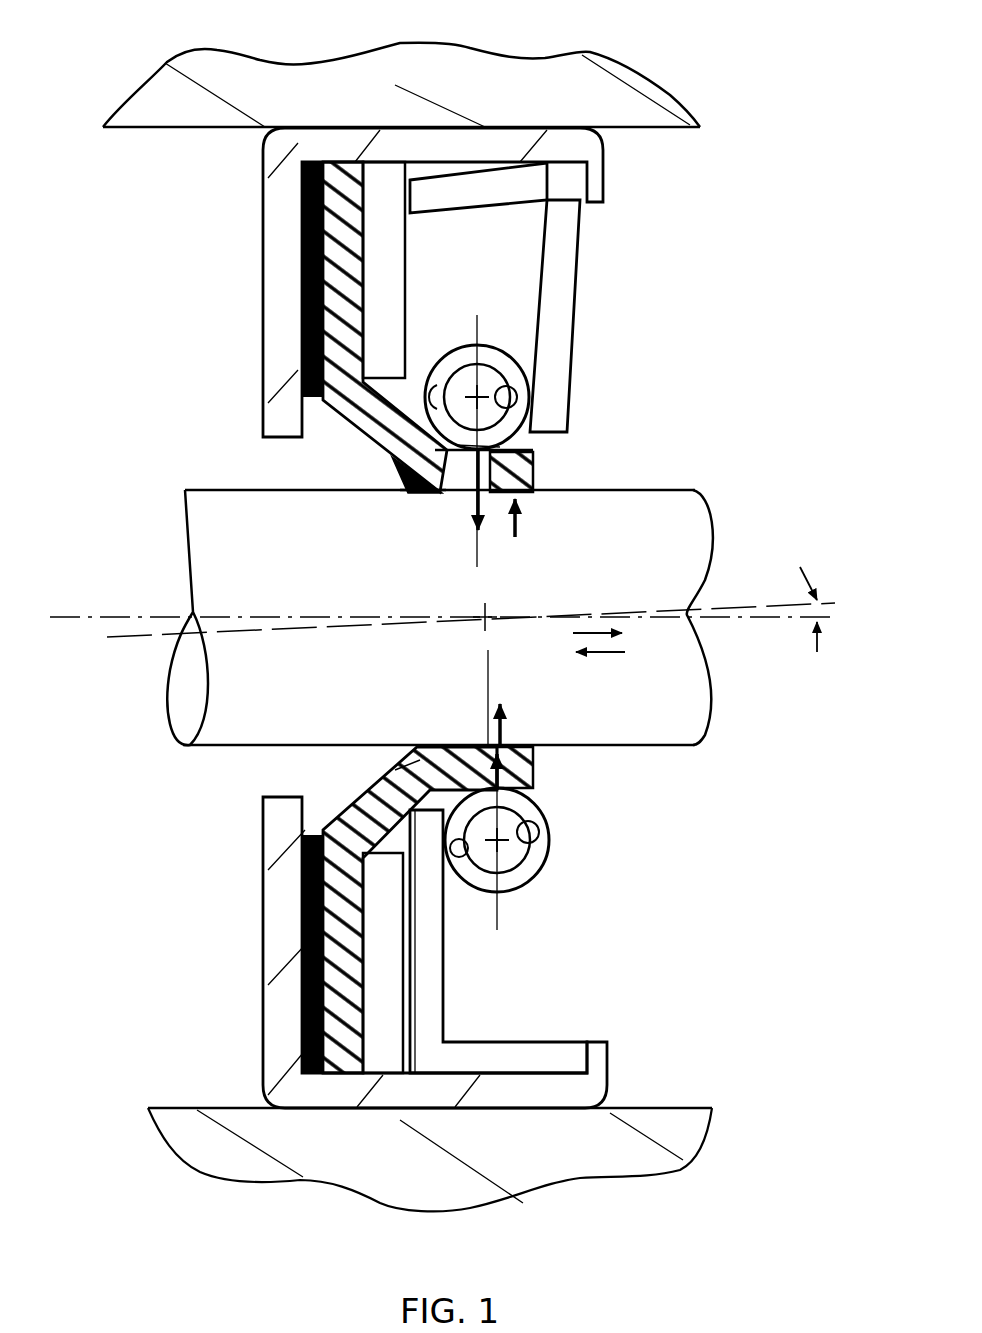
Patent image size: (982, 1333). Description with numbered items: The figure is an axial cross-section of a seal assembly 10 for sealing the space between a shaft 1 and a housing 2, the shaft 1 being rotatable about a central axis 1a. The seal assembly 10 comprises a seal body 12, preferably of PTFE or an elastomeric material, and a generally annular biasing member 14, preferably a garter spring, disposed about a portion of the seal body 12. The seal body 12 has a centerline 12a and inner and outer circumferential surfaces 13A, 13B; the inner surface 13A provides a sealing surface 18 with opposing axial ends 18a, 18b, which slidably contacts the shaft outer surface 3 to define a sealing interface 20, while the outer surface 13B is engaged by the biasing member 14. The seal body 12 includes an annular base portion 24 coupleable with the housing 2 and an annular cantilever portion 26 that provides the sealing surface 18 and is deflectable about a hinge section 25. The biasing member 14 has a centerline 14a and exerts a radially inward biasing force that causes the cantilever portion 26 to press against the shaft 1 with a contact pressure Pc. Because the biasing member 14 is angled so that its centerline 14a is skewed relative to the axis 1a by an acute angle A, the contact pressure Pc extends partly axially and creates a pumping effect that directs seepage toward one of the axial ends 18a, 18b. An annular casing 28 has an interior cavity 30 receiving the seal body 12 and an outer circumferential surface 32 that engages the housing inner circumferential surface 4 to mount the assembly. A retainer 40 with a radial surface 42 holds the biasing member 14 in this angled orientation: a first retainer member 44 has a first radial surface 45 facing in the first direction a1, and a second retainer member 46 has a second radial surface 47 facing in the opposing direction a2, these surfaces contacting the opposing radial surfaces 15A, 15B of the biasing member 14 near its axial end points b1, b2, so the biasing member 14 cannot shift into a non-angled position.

The shaft 1 is at (683, 470).
The central axis 1a is at (80, 617).
The housing 2 is at (692, 1112).
The shaft outer surface 3 is at (665, 750).
The housing inner circumferential surface 4 is at (640, 1108).
The seal assembly 10 is at (225, 443).
The seal body 12 is at (305, 362).
The centerline 12a is at (442, 582).
The inner circumferential surface 13A is at (450, 745).
The outer circumferential surface 13B is at (547, 822).
The biasing member 14 is at (533, 258).
The biasing member centerline 14a is at (140, 638).
The radial surface 15A is at (522, 400).
The radial surface 15B is at (385, 963).
The sealing surface 18 is at (515, 537).
The axial end 18a is at (408, 493).
The axial end 18b is at (535, 494).
The sealing interface 20 is at (440, 495).
The base portion 24 is at (330, 946).
The hinge section 25 is at (362, 432).
The cantilever portion 26 is at (535, 777).
The casing 28 is at (270, 214).
The interior cavity 30 is at (432, 170).
The outer circumferential surface 32 is at (329, 127).
The retainer 40 is at (578, 352).
The radial surface 42 is at (524, 634).
The first retainer member 44 is at (565, 263).
The first radial surface 45 is at (462, 384).
The second retainer member 46 is at (440, 948).
The second radial surface 47 is at (505, 893).
The acute angle A is at (800, 596).
The contact pressure Pc is at (470, 443).
The first direction a1 is at (615, 657).
The second direction a2 is at (614, 636).
The first point b1 is at (520, 437).
The second point b2 is at (400, 776).